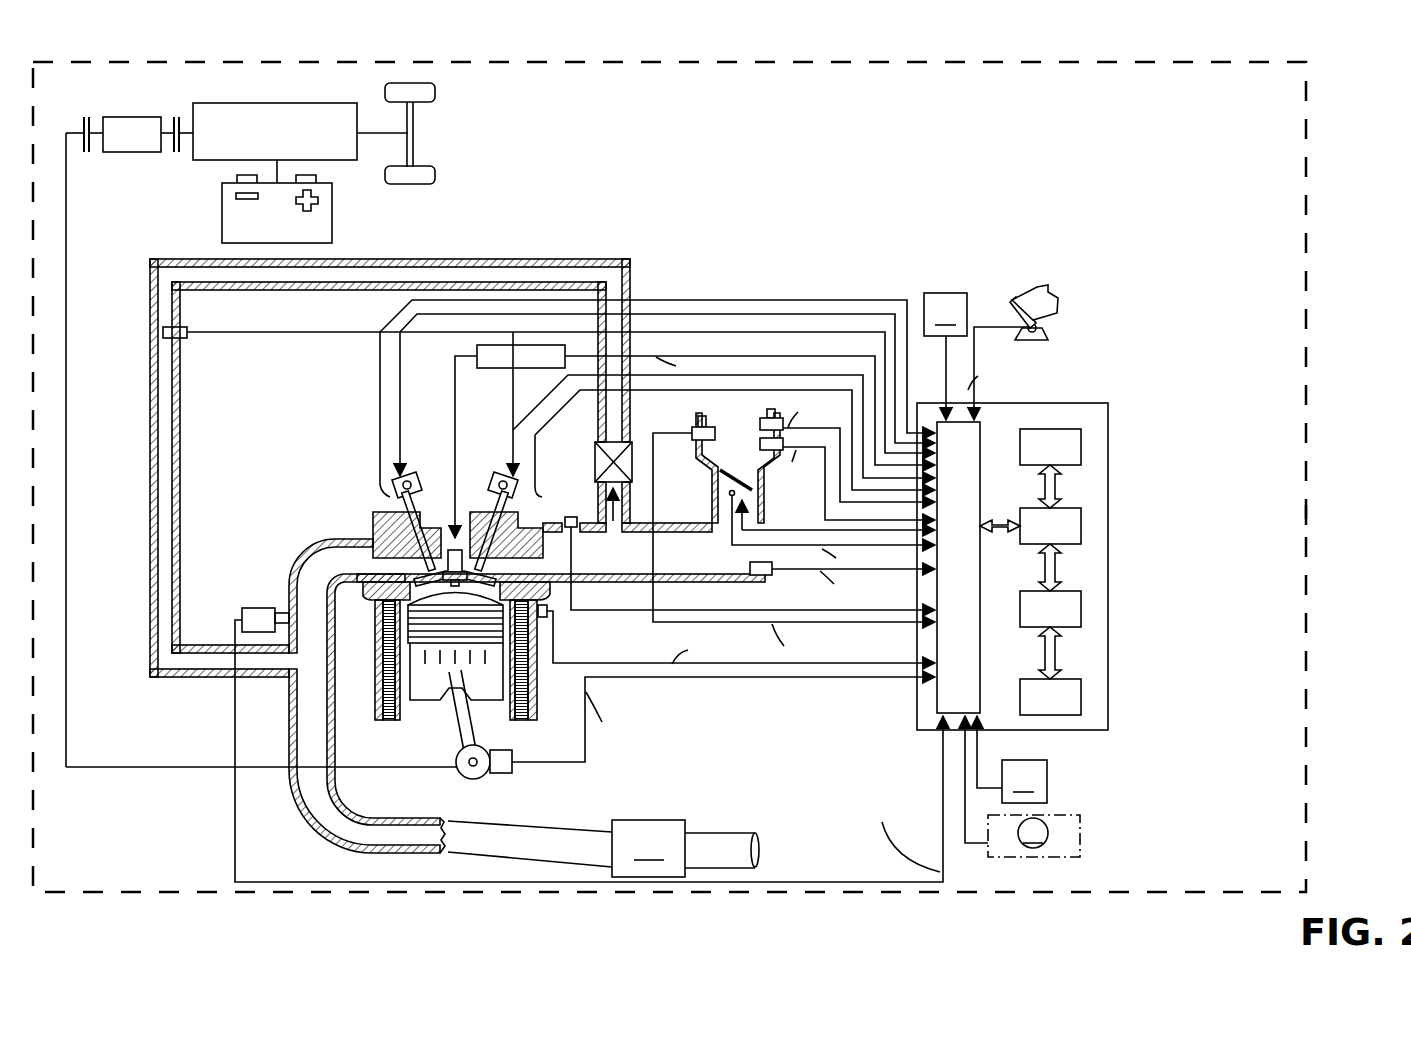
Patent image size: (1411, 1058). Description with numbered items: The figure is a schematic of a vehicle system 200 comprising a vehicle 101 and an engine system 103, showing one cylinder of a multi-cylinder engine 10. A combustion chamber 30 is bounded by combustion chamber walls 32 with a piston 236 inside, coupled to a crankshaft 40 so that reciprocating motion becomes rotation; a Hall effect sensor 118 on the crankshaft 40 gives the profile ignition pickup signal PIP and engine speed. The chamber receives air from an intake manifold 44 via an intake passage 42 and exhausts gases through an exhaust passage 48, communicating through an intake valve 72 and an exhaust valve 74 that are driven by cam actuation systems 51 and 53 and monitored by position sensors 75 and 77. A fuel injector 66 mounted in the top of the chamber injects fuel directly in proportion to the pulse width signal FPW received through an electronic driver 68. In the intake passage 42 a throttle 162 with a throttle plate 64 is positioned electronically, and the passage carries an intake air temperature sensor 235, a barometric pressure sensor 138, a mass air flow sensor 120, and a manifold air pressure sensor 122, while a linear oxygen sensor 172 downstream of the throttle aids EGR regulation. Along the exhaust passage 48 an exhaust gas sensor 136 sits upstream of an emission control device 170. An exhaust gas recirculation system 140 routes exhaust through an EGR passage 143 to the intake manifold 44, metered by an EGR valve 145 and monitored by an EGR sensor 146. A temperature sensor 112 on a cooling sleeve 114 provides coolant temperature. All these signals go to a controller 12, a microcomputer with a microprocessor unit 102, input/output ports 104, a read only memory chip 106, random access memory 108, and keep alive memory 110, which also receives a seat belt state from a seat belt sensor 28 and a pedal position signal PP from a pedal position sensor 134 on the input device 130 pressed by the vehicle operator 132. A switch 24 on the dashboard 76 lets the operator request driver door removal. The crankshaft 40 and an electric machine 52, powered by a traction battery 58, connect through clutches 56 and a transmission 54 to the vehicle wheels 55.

The vehicle system 200 is at (1186, 258).
The vehicle 101 is at (1308, 516).
The engine system 103 is at (842, 266).
The clutch 56 is at (84, 122).
The electric machine 52 is at (133, 152).
The transmission 54 is at (330, 160).
The vehicle wheels 55 is at (411, 185).
The traction battery 58 is at (332, 225).
The EGR passage 143 is at (386, 258).
The exhaust gas recirculation system 140 is at (508, 258).
The EGR valve 145 is at (594, 462).
The EGR sensor 146 is at (180, 338).
The engine 10 is at (320, 472).
The electronic driver 68 is at (532, 370).
The position sensor 77 is at (386, 490).
The cam actuation system 53 is at (413, 474).
The cam actuation system 51 is at (504, 474).
The position sensor 75 is at (542, 497).
The fuel injector 66 is at (458, 545).
The exhaust valve 74 is at (395, 548).
The intake valve 72 is at (522, 567).
The exhaust passage 48 is at (358, 572).
The emission control device 170 is at (685, 848).
The exhaust gas sensor 136 is at (242, 614).
The combustion chamber walls 32 is at (399, 722).
The cooling sleeve 114 is at (538, 690).
The combustion chamber 30 is at (384, 680).
The piston 236 is at (443, 682).
The crankshaft 40 is at (462, 776).
The Hall effect sensor 118 is at (510, 770).
The temperature sensor 112 is at (552, 620).
The intake manifold 44 is at (698, 567).
The linear oxygen sensor 172 is at (574, 540).
The intake passage 42 is at (748, 466).
The throttle plate 64 is at (722, 478).
The throttle 162 is at (756, 486).
The barometric pressure sensor 138 is at (692, 432).
The mass air flow sensor 120 is at (764, 418).
The intake air temperature sensor 235 is at (758, 446).
The manifold air pressure sensor 122 is at (770, 576).
The controller 12 is at (1090, 398).
The input/output ports 104 is at (985, 420).
The read only memory chip 106 is at (1082, 434).
The microprocessor unit 102 is at (1082, 512).
The random access memory 108 is at (1082, 594).
The keep alive memory 110 is at (1082, 682).
The seat belt sensor 28 is at (985, 548).
The switch 24 is at (1022, 786).
The dashboard 76 is at (1078, 830).
The input device 130 is at (1020, 306).
The pedal position sensor 134 is at (1046, 328).
The vehicle operator 132 is at (1056, 298).